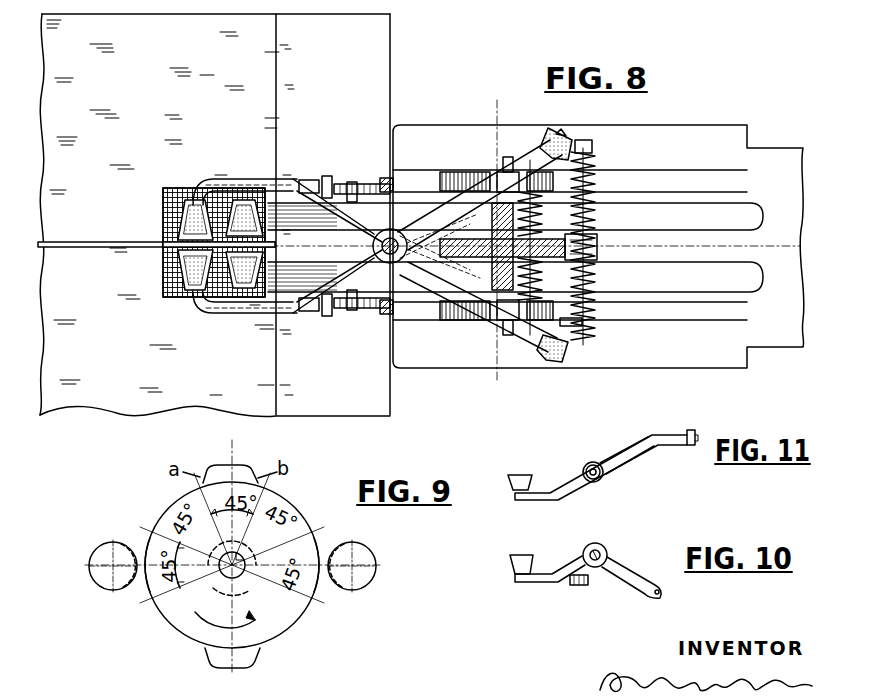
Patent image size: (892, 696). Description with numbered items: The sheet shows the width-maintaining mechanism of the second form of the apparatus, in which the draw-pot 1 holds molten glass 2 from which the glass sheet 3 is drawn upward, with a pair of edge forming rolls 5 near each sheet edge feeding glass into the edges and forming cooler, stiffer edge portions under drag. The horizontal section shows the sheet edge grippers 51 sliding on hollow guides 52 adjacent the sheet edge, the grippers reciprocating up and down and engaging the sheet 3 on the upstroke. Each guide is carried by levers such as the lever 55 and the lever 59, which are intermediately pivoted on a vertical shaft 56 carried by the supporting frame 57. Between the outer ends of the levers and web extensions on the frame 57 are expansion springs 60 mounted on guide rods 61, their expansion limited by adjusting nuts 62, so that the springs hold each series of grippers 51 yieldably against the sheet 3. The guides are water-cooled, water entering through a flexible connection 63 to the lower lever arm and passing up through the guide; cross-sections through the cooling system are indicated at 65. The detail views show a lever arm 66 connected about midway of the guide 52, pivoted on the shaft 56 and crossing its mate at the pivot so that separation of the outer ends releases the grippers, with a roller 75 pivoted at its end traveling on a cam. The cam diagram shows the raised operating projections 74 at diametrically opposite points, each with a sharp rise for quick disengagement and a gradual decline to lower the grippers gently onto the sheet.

In FIG. 8, the draw-pot 1 is at (370, 48).
In FIG. 8, the molten glass 2 is at (215, 215).
In FIG. 8, the glass sheet 3 is at (72, 243).
In FIG. 8, the edge forming rolls 5 is at (163, 268).
In FIG. 8, the sheet edge grippers 51 is at (163, 284).
In FIG. 11, the sheet edge grippers 51 is at (512, 487).
In FIG. 10, the sheet edge grippers 51 is at (510, 568).
In FIG. 11, the guides 52 is at (525, 475).
In FIG. 10, the guides 52 is at (523, 555).
In FIG. 8, the supporting lever 55 is at (543, 172).
In FIG. 8, the vertical shaft 56 is at (357, 246).
In FIG. 11, the vertical shaft 56 is at (592, 463).
In FIG. 10, the vertical shaft 56 is at (597, 546).
In FIG. 8, the supporting frame 57 is at (598, 245).
In FIG. 8, the lever 59 is at (505, 207).
In FIG. 10, the lever 59 is at (627, 570).
In FIG. 8, the expansion springs 60 is at (615, 336).
In FIG. 8, the guide rods 61 is at (583, 322).
In FIG. 8, the adjusting nuts 62 is at (550, 348).
In FIG. 8, the flexible connection 63 is at (376, 312).
In FIG. 10, the flexible connection 63 is at (587, 583).
In FIG. 8, the cooling system cross-sections 65 is at (205, 179).
In FIG. 11, the lever arms 66 is at (627, 453).
In FIG. 9, the raised operating projections 74 is at (230, 470).
In FIG. 11, the rollers 75 is at (692, 431).